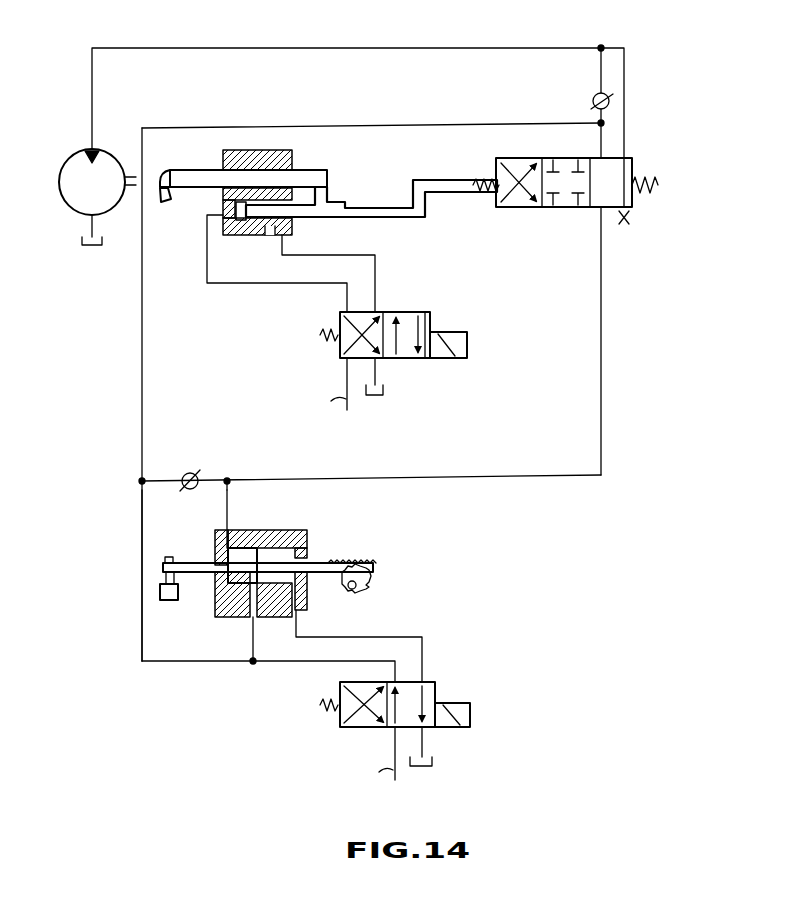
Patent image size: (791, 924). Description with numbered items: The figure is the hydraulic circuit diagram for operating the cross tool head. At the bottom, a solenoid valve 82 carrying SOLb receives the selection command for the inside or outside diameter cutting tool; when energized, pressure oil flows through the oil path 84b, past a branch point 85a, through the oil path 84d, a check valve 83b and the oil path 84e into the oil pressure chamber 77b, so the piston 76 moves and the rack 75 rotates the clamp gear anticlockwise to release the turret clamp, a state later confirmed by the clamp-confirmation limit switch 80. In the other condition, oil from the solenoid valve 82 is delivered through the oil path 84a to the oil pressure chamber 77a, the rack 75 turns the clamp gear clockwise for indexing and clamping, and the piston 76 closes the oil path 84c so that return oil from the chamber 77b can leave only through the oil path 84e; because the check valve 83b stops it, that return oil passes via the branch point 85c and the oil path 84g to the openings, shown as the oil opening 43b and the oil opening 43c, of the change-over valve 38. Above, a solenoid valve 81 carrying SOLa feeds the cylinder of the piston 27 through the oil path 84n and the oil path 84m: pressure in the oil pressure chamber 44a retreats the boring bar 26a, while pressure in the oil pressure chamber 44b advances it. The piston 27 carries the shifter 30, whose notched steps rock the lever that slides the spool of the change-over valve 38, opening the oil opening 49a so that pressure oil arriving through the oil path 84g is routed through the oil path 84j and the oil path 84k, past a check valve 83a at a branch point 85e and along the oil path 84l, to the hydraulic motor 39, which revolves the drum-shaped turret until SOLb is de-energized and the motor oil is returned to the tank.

The hydraulic motor 39 is at (70, 178).
The oil path 84k is at (299, 46).
The oil path 84j is at (630, 71).
The check valve 83a is at (592, 96).
The branch point 85e is at (598, 122).
The oil path 84l is at (333, 126).
The oil opening 43c is at (598, 150).
The oil opening 43b is at (600, 212).
The change-over valve 38 is at (583, 180).
The oil opening 49a is at (632, 160).
The boring bar 26a is at (194, 180).
The oil pressure chamber 44a is at (230, 200).
The piston 27 is at (239, 222).
The oil pressure chamber 44b is at (264, 236).
The shifter 30 is at (330, 210).
The oil path 84n is at (295, 284).
The oil path 84m is at (334, 256).
The solenoid valve 81 is at (405, 312).
The oil path 84g is at (495, 478).
The check valve 83b is at (186, 473).
The branch point 85c is at (228, 480).
The oil path 84e is at (229, 512).
The oil pressure chamber 77b is at (222, 550).
The oil pressure chamber 77a is at (308, 548).
The piston 76 is at (245, 550).
The rack 75 is at (375, 565).
The clamp-confirmation limit switch 80 is at (170, 600).
The oil path 84d is at (142, 566).
The oil path 84c is at (252, 642).
The branch point 85a is at (252, 663).
The oil path 84b is at (283, 663).
The oil path 84a is at (424, 637).
The solenoid valve 82 is at (445, 728).